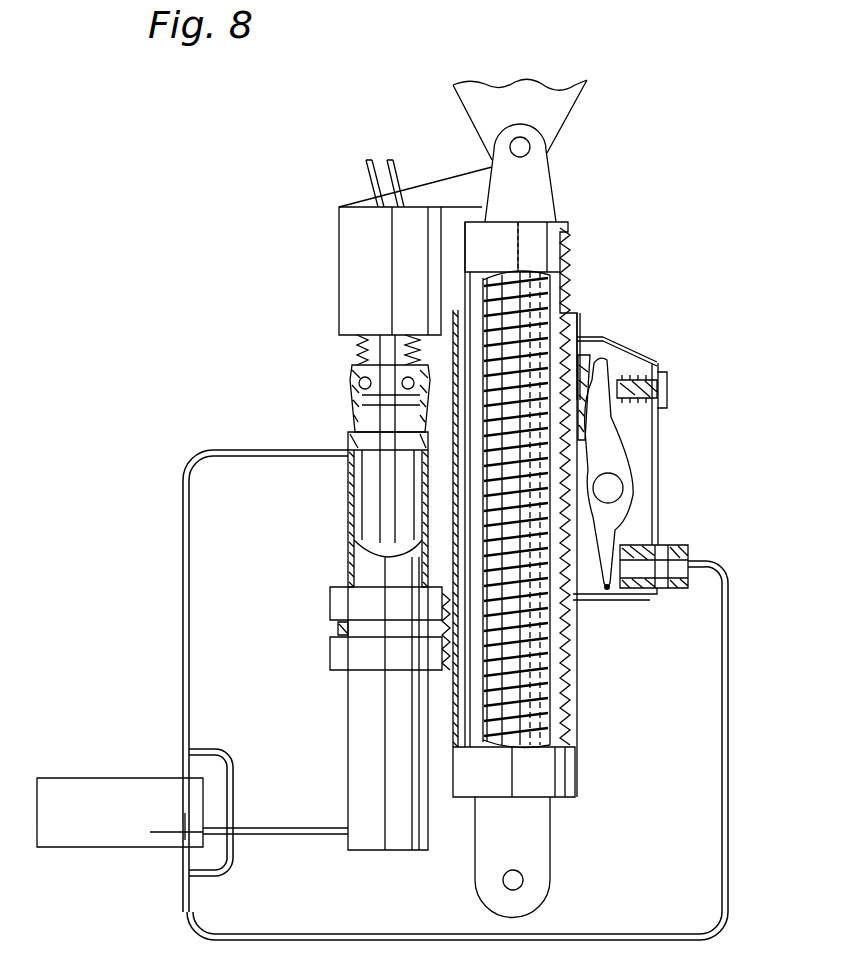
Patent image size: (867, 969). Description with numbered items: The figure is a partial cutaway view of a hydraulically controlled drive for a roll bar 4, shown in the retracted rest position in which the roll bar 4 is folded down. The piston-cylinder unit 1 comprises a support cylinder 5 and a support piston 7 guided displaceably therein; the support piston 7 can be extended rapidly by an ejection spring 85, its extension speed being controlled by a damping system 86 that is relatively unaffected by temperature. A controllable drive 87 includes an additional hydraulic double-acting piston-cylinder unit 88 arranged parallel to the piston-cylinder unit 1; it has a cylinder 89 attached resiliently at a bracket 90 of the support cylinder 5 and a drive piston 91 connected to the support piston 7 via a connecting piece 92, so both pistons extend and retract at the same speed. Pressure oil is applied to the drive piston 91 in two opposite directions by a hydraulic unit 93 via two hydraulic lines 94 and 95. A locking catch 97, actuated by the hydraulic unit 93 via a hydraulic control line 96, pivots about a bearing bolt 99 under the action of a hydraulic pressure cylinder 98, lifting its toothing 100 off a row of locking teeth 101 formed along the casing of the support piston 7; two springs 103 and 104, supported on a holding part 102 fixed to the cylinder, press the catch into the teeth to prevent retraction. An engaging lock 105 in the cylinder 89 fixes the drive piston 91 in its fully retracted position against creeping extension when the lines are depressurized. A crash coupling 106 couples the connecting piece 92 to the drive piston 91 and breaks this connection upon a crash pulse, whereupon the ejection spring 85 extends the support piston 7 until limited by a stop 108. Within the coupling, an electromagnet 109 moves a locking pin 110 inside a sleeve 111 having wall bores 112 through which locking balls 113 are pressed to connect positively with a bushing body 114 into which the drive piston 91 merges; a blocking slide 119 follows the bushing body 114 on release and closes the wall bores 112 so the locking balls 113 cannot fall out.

The piston-cylinder unit 1 is at (589, 308).
The roll bar 4 is at (573, 83).
The support cylinder 5 is at (563, 783).
The support piston 7 is at (556, 232).
The ejection spring 85 is at (540, 703).
The damping system 86 is at (518, 627).
The controllable drive 87 is at (262, 704).
The hydraulic double-acting piston-cylinder unit 88 is at (350, 455).
The cylinder 89 is at (365, 835).
The bracket 90 is at (440, 625).
The drive piston 91 is at (383, 496).
The connecting piece 92 is at (433, 188).
The hydraulic unit 93 is at (120, 830).
The hydraulic line 94 is at (250, 838).
The hydraulic line 95 is at (184, 488).
The hydraulic control line 96 is at (732, 790).
The locking catch 97 is at (598, 410).
The hydraulic pressure cylinder 98 is at (660, 545).
The bearing bolt 99 is at (615, 490).
The toothing 100 is at (579, 372).
The row of locking teeth 101 is at (570, 270).
The holding part 102 is at (647, 357).
The spring 103 is at (593, 572).
The spring 104 is at (645, 388).
The engaging lock 105 is at (352, 762).
The crash coupling 106 is at (346, 367).
The stop 108 is at (448, 553).
The electromagnet 109 is at (360, 223).
The locking pin 110 is at (372, 335).
The sleeve 111 is at (352, 345).
The wall bores 112 is at (360, 393).
The locking balls 113 is at (359, 383).
The bushing body 114 is at (353, 427).
The blocking slide 119 is at (425, 335).